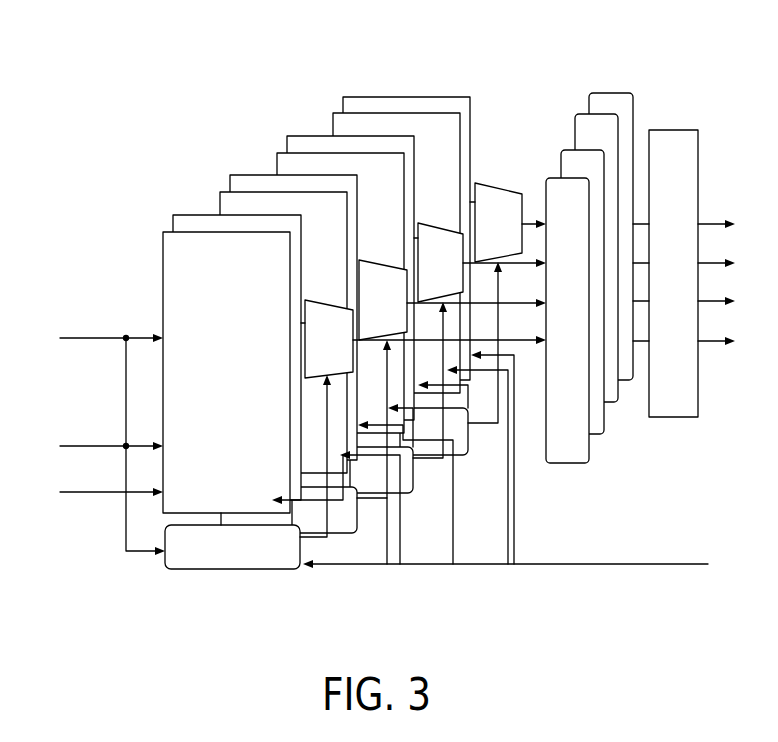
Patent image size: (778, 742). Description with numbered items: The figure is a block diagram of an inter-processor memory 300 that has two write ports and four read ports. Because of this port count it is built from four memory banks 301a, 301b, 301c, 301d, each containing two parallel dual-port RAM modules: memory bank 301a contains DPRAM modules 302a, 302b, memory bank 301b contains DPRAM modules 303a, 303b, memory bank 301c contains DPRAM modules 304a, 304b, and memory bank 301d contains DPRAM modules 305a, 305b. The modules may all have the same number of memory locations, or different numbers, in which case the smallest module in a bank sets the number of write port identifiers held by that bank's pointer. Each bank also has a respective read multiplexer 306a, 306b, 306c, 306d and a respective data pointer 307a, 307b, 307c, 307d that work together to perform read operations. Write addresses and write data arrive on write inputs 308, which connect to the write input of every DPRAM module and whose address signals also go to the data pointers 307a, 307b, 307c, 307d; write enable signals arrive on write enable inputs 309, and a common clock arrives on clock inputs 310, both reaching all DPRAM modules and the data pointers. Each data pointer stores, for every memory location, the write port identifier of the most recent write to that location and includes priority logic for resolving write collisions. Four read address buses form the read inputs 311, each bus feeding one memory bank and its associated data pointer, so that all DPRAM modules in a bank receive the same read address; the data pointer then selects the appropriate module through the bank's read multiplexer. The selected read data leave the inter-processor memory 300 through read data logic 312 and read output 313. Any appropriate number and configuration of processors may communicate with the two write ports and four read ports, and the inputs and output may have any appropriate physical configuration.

The inter-processor memory 300 is at (127, 122).
The memory bank 301a is at (256, 327).
The memory bank 301b is at (313, 287).
The memory bank 301c is at (404, 248).
The memory bank 301d is at (416, 209).
The DPRAM module 302a is at (272, 258).
The DPRAM module 302b is at (277, 220).
The DPRAM module 303a is at (262, 196).
The DPRAM module 303b is at (322, 190).
The DPRAM module 304a is at (383, 157).
The DPRAM module 304b is at (333, 142).
The DPRAM module 305a is at (412, 124).
The DPRAM module 305b is at (463, 105).
The read multiplexer 306a is at (347, 349).
The read multiplexer 306b is at (401, 309).
The read multiplexer 306c is at (459, 271).
The read multiplexer 306d is at (517, 231).
The data pointer 307a is at (225, 570).
The data pointer 307b is at (310, 520).
The data pointer 307c is at (365, 480).
The data pointer 307d is at (437, 440).
The write inputs 308 is at (73, 338).
The write enable inputs 309 is at (73, 446).
The clock inputs 310 is at (73, 492).
The read inputs 311 is at (681, 552).
The read data logic 312 is at (615, 80).
The read output 313 is at (672, 148).